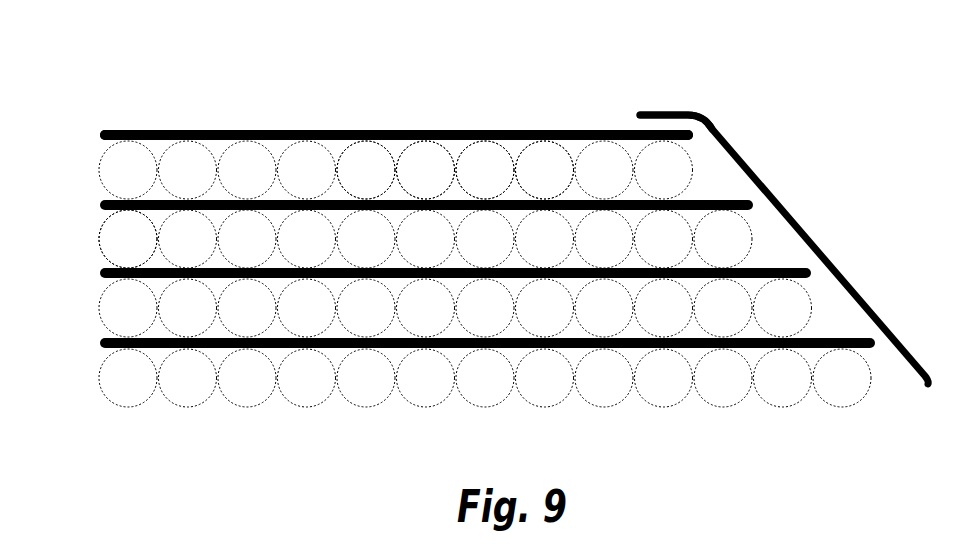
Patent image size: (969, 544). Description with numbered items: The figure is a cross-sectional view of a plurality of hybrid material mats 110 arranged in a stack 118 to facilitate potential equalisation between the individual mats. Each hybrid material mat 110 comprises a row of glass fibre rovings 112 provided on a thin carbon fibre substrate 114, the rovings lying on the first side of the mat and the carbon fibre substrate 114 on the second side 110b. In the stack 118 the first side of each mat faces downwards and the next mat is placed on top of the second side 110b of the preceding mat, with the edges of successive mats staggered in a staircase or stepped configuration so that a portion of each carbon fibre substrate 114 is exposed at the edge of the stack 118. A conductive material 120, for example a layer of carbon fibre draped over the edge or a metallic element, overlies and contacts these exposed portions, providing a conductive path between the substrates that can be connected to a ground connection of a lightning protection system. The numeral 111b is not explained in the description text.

The hybrid material mat 110 is at (85, 352).
The second side of hybrid material mat 110b is at (662, 128).
The gap between fibers 111b is at (100, 215).
The glass fibre rovings 112 is at (547, 165).
The carbon fibre substrate 114 is at (277, 129).
The stack 118 is at (99, 99).
The conductive material 120 is at (790, 232).